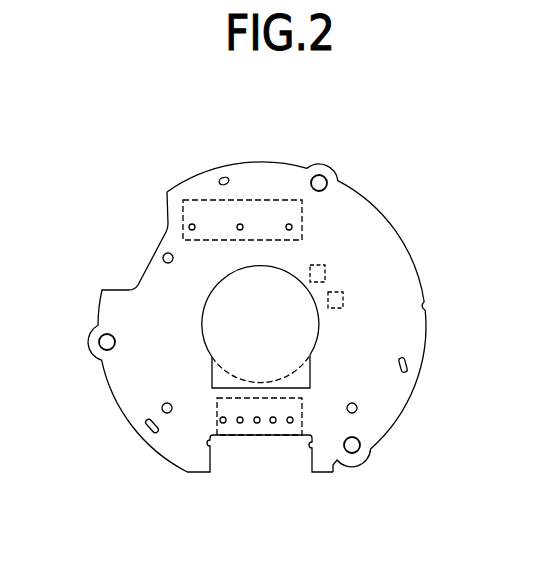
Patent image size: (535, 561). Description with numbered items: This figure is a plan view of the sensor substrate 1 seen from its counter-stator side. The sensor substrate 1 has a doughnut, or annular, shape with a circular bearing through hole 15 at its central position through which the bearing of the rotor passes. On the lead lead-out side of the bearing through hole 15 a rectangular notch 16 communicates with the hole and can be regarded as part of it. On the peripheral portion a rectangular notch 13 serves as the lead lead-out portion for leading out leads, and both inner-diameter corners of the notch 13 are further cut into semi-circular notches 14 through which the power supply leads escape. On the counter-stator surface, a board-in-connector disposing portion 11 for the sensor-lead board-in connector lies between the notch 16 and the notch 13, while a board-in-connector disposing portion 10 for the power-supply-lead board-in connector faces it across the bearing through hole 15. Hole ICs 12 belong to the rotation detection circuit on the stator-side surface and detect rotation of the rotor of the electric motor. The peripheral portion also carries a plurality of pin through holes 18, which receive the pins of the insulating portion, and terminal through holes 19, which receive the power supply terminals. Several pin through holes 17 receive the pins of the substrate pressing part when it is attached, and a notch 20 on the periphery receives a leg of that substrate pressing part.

The sensor substrate 1 is at (367, 230).
The board-in-connector disposing portion 10 is at (209, 200).
The board-in-connector disposing portion 11 is at (305, 410).
The hole ICs 12 is at (325, 270).
The notch 13 is at (297, 450).
The notches 14 is at (212, 443).
The bearing through hole 15 is at (212, 333).
The notch 16 is at (310, 367).
The pin through holes 17 is at (163, 258).
The pin through holes 18 is at (319, 183).
The terminal through holes 19 is at (224, 180).
The notch 20 is at (420, 306).